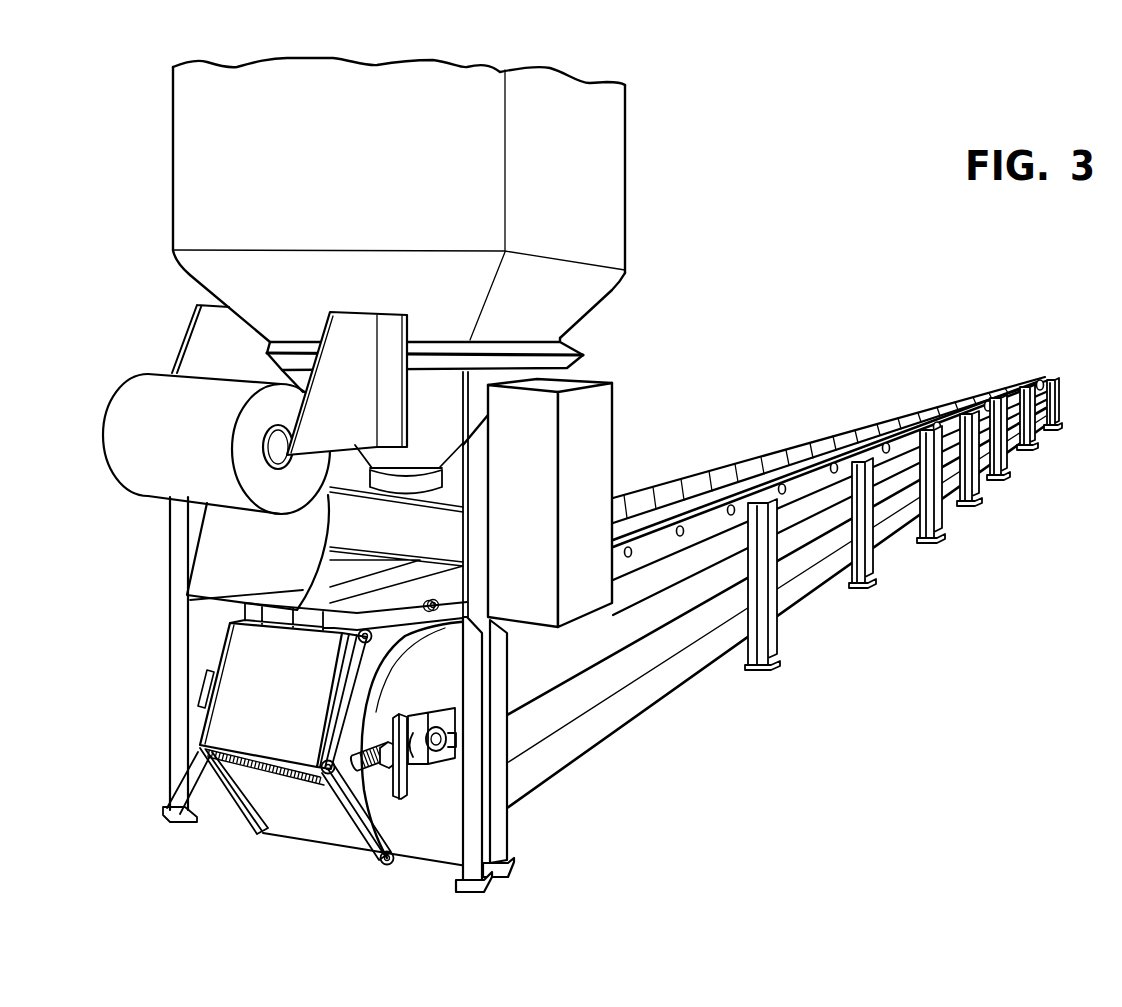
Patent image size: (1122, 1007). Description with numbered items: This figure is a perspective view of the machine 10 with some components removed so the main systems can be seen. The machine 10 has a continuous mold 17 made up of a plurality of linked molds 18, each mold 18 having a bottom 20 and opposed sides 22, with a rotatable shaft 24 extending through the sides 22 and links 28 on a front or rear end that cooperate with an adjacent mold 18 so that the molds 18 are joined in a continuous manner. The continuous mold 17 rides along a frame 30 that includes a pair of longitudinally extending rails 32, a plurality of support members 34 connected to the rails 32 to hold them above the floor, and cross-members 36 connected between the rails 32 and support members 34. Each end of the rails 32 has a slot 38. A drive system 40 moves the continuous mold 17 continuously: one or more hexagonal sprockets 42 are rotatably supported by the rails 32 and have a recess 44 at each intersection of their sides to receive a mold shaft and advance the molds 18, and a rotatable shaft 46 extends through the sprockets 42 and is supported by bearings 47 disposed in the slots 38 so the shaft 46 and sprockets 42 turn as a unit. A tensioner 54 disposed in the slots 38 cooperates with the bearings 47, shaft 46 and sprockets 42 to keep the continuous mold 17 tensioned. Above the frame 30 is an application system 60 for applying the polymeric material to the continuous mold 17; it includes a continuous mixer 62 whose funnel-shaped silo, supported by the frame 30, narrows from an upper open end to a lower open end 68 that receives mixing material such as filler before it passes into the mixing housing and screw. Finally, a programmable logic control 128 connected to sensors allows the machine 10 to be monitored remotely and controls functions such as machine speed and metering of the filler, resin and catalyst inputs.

The machine 10 is at (945, 318).
The continuous mold 17 is at (921, 402).
The molds 18 is at (722, 477).
The bottom 20 is at (281, 705).
The sides 22 is at (212, 718).
The rotatable shaft 24 is at (214, 790).
The links 28 is at (372, 645).
The frame 30 is at (712, 666).
The rails 32 is at (798, 530).
The support members 34 is at (763, 600).
The cross-members 36 is at (452, 880).
The slot 38 is at (384, 786).
The drive system 40 is at (348, 812).
The sprockets 42 is at (292, 765).
The recess 44 is at (347, 733).
The rotatable shaft 46 is at (443, 737).
The bearings 47 is at (433, 766).
The tensioner 54 is at (403, 795).
The application system 60 is at (363, 527).
The continuous mixer 62 is at (632, 172).
The lower open end 68 is at (433, 320).
The programmable logic control 128 is at (612, 425).